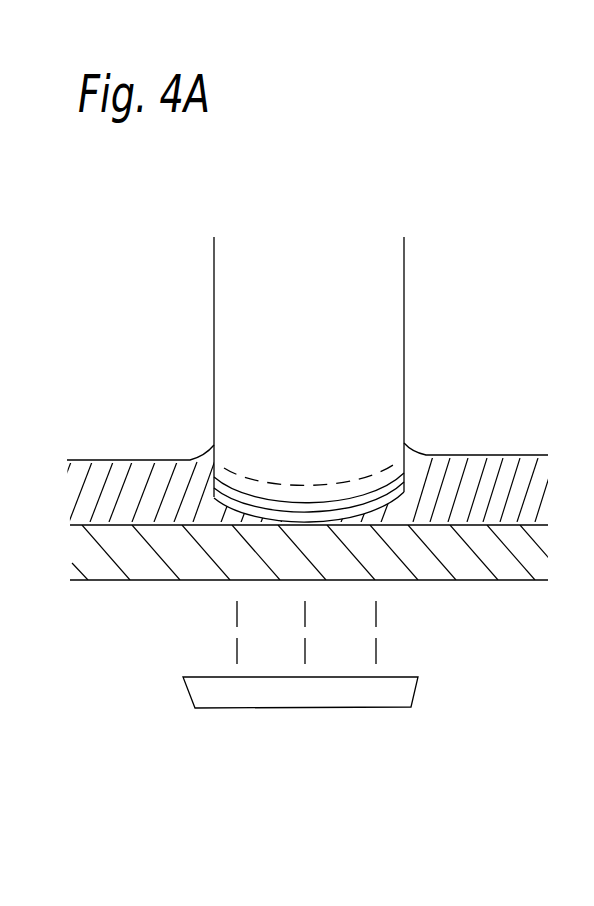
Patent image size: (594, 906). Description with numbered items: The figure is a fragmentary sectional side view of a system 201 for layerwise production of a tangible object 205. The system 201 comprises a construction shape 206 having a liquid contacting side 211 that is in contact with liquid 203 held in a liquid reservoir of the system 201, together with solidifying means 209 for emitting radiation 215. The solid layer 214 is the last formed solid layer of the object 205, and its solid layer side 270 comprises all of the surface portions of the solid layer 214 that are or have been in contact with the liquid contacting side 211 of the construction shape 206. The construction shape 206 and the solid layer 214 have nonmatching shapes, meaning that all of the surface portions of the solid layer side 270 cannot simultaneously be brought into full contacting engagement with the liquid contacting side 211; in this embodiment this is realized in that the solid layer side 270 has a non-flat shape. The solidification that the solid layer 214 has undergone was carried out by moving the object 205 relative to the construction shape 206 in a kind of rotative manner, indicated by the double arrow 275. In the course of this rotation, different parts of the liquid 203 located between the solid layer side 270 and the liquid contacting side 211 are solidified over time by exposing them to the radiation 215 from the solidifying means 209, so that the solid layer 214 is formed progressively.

The system 201 is at (503, 718).
The liquid 203 is at (110, 478).
The tangible object 205 is at (412, 316).
The construction shape 206 is at (100, 570).
The solidifying means 209 is at (240, 697).
The liquid contacting side 211 is at (480, 530).
The solid layer 214 is at (224, 500).
The radiation 215 is at (378, 648).
The solid layer side 270 is at (362, 516).
The double arrow 275 is at (360, 230).